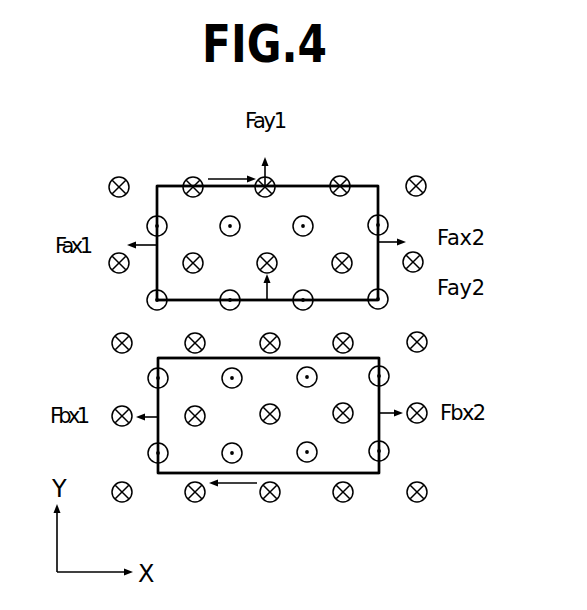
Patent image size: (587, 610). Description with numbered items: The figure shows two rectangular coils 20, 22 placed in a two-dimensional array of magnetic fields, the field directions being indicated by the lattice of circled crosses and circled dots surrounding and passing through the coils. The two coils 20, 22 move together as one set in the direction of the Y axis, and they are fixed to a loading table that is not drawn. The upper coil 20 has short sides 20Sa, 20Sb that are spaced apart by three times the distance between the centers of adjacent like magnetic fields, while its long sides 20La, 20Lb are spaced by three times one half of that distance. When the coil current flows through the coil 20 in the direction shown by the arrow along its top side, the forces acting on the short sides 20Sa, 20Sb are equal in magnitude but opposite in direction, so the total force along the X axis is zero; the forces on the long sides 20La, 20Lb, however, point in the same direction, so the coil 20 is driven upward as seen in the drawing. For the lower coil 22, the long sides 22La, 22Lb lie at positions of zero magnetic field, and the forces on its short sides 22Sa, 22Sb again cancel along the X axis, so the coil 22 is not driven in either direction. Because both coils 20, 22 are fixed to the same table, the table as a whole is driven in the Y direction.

The coil 20 is at (158, 182).
The long side of coil 20 20La is at (317, 183).
The long side of coil 20 20Lb is at (348, 302).
The short side of coil 20 20Sa is at (155, 277).
The short side of coil 20 20Sb is at (380, 201).
The coil 22 is at (292, 482).
The long side of coil 22 22La is at (362, 357).
The long side of coil 22 22Lb is at (318, 475).
The short side of coil 22 22Sa is at (158, 433).
The short side of coil 22 22Sb is at (383, 432).